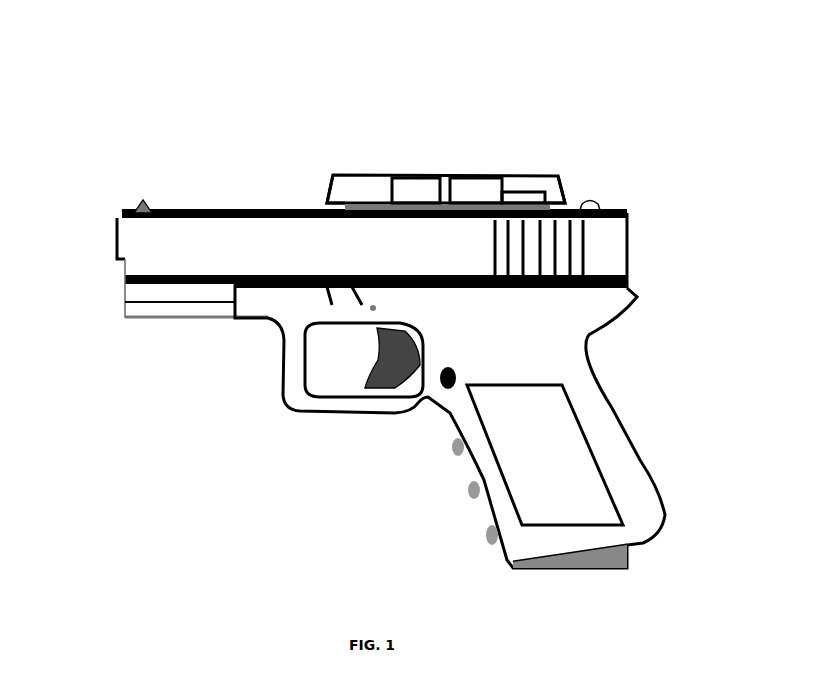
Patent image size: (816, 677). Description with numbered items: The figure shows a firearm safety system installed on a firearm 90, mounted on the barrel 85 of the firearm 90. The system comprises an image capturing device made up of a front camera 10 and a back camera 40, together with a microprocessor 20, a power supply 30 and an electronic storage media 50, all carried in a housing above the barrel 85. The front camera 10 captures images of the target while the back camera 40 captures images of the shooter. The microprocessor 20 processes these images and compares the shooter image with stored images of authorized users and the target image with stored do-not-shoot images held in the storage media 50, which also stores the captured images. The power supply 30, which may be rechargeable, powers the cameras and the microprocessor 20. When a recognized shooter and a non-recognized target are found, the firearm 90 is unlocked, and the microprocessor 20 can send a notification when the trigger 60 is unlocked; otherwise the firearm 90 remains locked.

The front camera 10 is at (330, 187).
The microprocessor 20 is at (402, 175).
The power supply 30 is at (472, 176).
The back camera 40 is at (566, 178).
The electronic storage media 50 is at (556, 192).
The trigger 60 is at (368, 365).
The barrel 85 is at (73, 98).
The firearm 90 is at (568, 570).